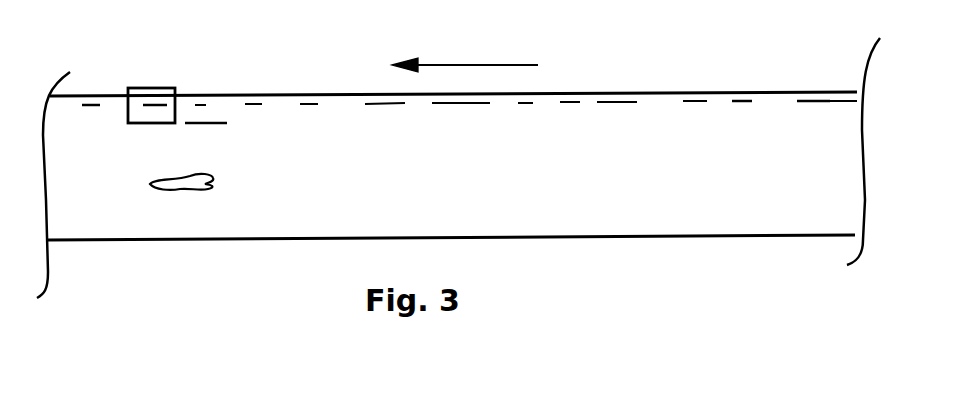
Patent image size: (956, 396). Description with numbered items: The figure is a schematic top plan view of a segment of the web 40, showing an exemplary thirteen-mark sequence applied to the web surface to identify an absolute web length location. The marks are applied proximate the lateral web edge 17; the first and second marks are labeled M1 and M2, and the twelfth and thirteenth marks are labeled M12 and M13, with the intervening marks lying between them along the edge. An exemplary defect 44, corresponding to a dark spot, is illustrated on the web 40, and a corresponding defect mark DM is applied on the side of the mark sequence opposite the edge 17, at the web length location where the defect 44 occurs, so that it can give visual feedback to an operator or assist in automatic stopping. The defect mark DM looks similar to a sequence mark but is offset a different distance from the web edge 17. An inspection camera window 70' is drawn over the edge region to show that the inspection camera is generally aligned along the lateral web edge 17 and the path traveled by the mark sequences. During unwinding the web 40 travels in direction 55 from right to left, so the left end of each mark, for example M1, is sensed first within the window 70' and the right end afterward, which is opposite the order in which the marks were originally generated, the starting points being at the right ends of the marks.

The web edge 17 is at (318, 95).
The web 40 is at (327, 202).
The inspection camera window 70' is at (142, 76).
The defect mark DM is at (217, 123).
The direction of web travel 55 is at (465, 51).
The defect 44 is at (190, 180).
The first mark M1 is at (90, 106).
The second mark M2 is at (155, 107).
The twelfth mark M12 is at (742, 103).
The thirteenth mark M13 is at (820, 103).